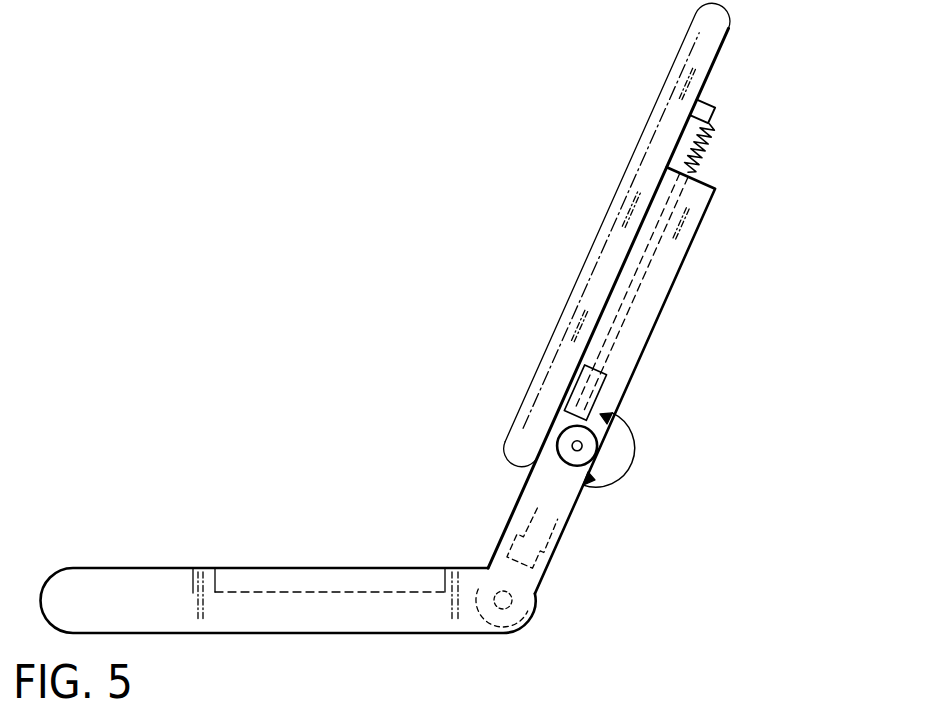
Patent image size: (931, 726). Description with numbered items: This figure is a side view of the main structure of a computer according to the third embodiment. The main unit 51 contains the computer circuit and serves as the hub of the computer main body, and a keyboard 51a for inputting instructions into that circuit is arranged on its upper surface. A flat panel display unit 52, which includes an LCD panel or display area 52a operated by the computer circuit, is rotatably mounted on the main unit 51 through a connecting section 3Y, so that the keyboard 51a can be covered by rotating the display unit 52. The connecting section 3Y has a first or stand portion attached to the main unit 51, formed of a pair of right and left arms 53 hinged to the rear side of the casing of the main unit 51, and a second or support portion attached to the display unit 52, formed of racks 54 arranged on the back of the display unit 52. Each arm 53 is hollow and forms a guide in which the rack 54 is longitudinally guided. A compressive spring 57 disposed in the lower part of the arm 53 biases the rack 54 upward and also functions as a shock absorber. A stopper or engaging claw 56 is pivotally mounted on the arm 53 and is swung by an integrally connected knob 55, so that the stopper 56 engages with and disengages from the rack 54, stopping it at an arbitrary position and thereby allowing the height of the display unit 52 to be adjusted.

The main unit 51 is at (430, 625).
The keyboard 51a is at (343, 575).
The flat panel display unit 52 is at (656, 97).
The display area 52a is at (613, 198).
The arm 53 is at (674, 286).
The rack 54 is at (716, 112).
The knob 55 is at (596, 448).
The stopper 56 is at (595, 372).
The compressive spring 57 is at (560, 541).
The connecting section 3Y is at (668, 328).